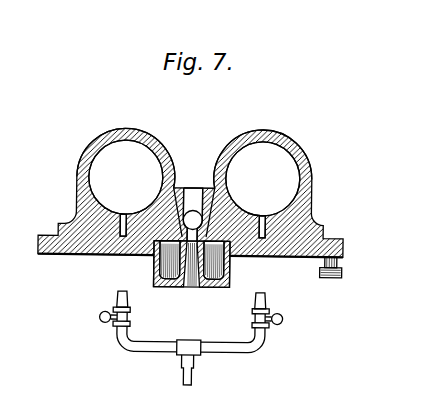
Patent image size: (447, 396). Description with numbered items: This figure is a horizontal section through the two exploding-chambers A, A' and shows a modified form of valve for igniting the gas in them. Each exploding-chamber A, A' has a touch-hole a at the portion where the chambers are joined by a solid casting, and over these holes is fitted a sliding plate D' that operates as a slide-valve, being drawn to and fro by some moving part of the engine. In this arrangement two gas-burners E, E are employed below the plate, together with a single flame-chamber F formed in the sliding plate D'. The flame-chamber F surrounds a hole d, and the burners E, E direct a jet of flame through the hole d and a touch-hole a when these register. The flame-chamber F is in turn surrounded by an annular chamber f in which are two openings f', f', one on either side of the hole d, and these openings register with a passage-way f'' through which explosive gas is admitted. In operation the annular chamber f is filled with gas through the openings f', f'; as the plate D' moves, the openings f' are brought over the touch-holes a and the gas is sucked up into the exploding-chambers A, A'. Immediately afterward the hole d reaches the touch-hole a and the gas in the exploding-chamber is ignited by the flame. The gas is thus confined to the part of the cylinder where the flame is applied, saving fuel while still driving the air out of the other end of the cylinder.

The exploding-chamber A is at (125, 171).
The exploding-chamber A' is at (262, 172).
The touch-hole a is at (191, 217).
The sliding plate D' is at (202, 208).
The gas-burner E is at (191, 338).
The flame-chamber F is at (198, 283).
The annular chamber f is at (225, 260).
The opening f' is at (191, 199).
The passage-way f'' is at (152, 251).
The hole d is at (179, 245).